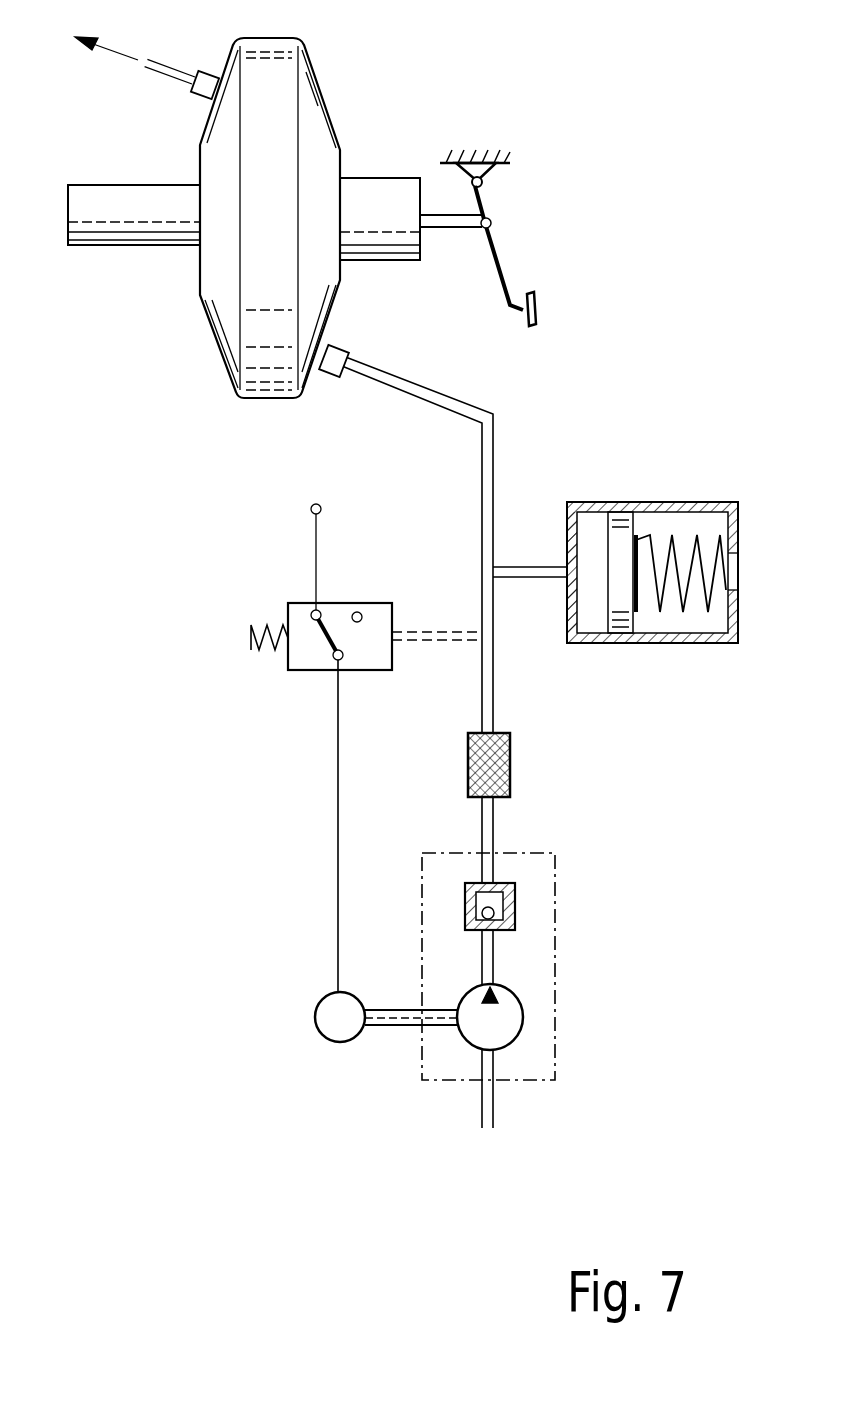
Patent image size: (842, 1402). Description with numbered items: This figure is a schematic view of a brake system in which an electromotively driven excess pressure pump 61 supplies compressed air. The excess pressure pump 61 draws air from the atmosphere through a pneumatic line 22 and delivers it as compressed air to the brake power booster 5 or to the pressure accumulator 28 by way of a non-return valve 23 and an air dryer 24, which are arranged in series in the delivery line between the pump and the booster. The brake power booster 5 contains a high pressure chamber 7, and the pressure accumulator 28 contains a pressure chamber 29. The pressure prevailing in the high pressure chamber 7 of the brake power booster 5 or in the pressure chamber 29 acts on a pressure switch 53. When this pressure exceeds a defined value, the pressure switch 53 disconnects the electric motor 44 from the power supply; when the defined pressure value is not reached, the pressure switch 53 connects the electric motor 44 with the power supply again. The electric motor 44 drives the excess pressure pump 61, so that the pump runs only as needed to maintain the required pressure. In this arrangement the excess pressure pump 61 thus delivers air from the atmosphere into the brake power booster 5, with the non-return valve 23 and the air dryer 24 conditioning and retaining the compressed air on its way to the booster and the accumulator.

The brake power booster 5 is at (325, 66).
The high pressure chamber 7 is at (327, 160).
The pneumatic line 22 is at (494, 1112).
The non-return valve 23 is at (516, 903).
The air dryer 24 is at (511, 764).
The pressure accumulator 28 is at (676, 494).
The pressure chamber 29 is at (590, 535).
The electric motor 44 is at (314, 1018).
The pressure switch 53 is at (378, 611).
The excess pressure pump 61 is at (524, 1020).